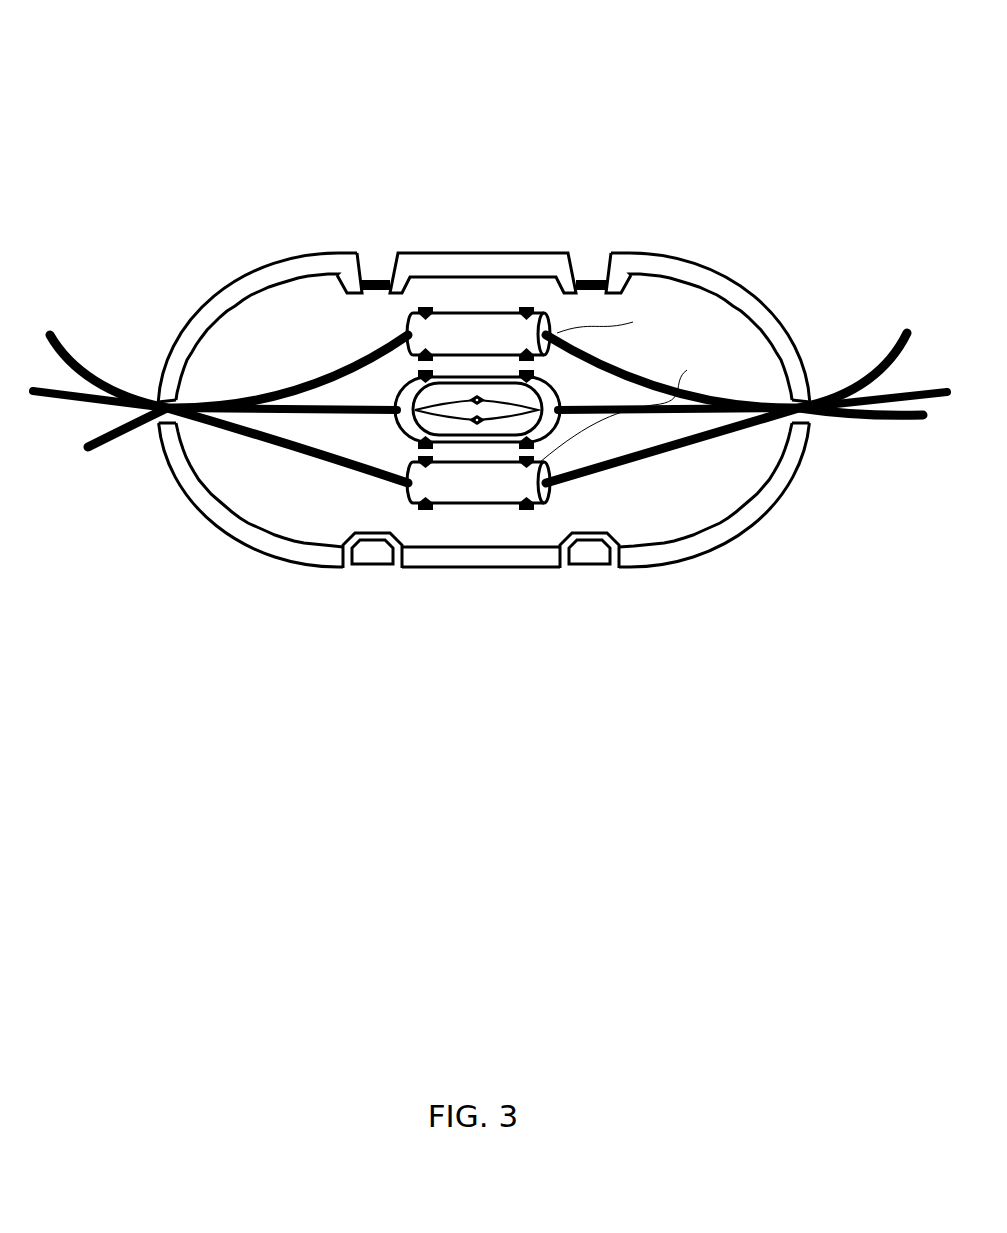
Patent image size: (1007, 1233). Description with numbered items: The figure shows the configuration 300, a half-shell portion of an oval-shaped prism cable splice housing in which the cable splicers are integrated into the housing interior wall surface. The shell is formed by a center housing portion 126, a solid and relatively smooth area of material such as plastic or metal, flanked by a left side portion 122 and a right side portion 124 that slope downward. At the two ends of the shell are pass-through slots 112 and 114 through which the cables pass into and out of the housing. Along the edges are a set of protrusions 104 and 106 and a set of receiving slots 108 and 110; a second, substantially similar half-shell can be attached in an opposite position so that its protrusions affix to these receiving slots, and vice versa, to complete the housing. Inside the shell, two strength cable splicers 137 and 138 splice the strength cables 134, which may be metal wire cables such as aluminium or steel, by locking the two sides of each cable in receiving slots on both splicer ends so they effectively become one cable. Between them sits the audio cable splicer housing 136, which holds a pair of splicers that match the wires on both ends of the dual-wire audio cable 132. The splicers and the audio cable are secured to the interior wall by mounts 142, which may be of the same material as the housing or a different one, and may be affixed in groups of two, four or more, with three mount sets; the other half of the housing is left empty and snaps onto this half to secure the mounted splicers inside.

The configuration 300 is at (70, 36).
The protrusion 104 is at (377, 280).
The protrusion 106 is at (590, 280).
The receiving slot 108 is at (357, 570).
The receiving slot 110 is at (577, 560).
The pass-through slot 112 is at (153, 422).
The pass-through slot 114 is at (812, 420).
The left side portion 122 is at (281, 262).
The right side portion 124 is at (673, 272).
The center housing portion 126 is at (487, 262).
The audio cable 132 is at (340, 413).
The strength cables 134 is at (344, 372).
The audio cable splicer housing 136 is at (560, 425).
The strength cable splicer 137 is at (478, 334).
The strength cable splicer 138 is at (478, 482).
The mounts 142 is at (421, 470).